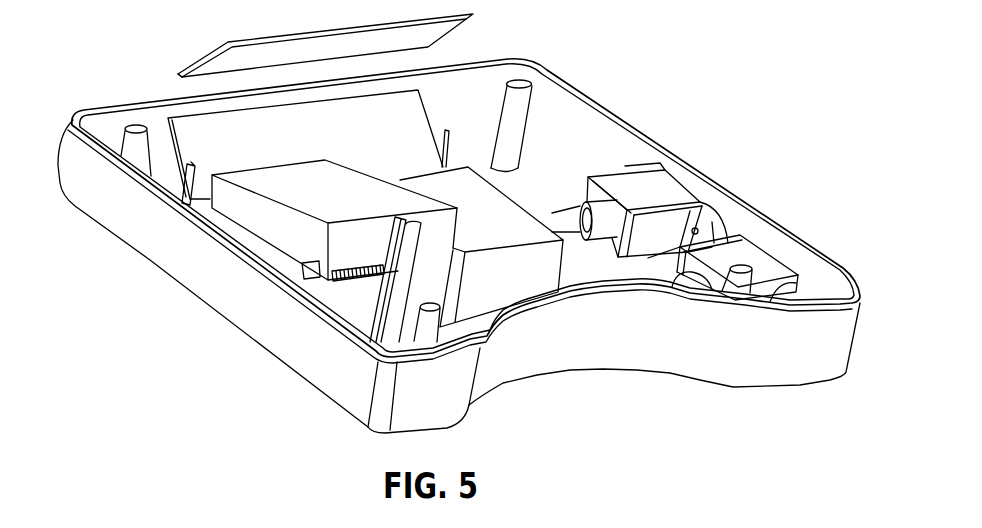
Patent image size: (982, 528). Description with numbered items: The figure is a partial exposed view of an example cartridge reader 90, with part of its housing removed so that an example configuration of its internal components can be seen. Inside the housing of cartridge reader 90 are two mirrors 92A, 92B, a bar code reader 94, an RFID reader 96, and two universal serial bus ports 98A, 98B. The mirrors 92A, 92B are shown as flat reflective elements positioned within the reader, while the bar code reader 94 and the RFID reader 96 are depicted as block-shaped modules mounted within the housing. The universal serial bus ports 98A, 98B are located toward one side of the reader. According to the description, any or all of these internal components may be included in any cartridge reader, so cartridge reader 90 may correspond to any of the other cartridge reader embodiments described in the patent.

The cartridge reader 90 is at (742, 74).
The mirror 92A is at (475, 15).
The mirror 92B is at (418, 130).
The bar code reader 94 is at (478, 197).
The RFID reader 96 is at (323, 183).
The universal serial bus port 98A is at (657, 178).
The universal serial bus port 98B is at (750, 257).